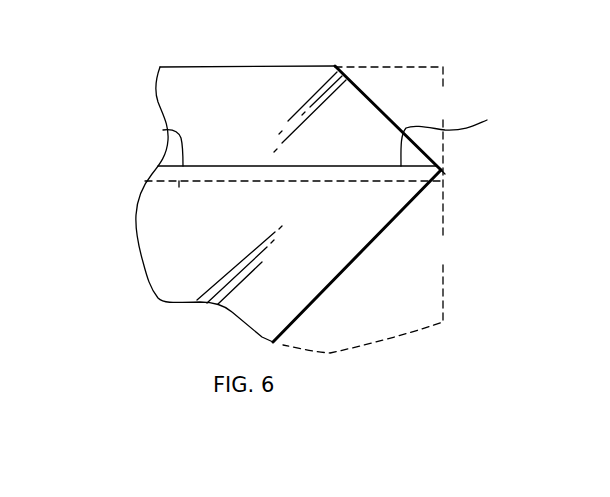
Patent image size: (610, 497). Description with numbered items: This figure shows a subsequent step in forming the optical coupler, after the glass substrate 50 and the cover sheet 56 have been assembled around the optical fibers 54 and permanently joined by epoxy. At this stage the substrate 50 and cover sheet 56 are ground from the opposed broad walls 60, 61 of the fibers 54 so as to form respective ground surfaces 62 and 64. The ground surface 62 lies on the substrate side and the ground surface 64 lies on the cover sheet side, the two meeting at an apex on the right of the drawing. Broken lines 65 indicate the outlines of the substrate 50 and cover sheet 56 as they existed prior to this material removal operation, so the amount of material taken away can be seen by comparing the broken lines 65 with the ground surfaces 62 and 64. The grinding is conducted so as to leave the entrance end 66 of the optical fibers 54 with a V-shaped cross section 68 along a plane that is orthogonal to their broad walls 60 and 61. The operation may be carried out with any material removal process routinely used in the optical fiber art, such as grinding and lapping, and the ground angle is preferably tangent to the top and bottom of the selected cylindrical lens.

The glass substrate 50 is at (149, 282).
The optical fiber 54 is at (150, 170).
The cover sheet 56 is at (157, 88).
The broad wall 60 is at (165, 131).
The broad wall 61 is at (179, 183).
The ground surface 62 is at (360, 257).
The ground surface 64 is at (365, 95).
The broken lines 65 is at (371, 210).
The entrance end 66 is at (457, 132).
The V-shaped cross section 68 is at (442, 172).